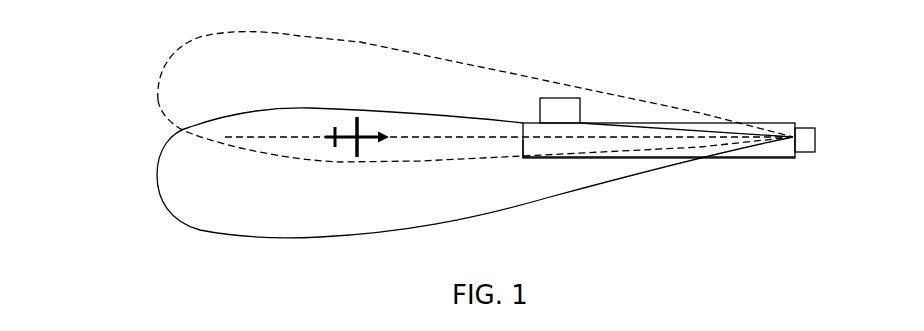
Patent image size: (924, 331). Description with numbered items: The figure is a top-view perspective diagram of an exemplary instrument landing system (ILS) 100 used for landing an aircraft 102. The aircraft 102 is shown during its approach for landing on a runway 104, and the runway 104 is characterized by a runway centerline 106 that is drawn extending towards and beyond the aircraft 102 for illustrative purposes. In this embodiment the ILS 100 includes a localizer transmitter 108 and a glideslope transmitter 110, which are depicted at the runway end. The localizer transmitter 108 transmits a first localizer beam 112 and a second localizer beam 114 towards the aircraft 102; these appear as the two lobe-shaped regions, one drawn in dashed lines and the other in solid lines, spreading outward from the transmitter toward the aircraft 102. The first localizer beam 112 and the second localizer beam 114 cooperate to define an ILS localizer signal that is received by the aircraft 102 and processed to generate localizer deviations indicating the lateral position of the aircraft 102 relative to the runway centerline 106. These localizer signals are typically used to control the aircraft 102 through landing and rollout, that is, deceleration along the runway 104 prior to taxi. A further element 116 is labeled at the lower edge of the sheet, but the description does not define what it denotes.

The instrument landing system 100 is at (659, 68).
The aircraft 102 is at (347, 150).
The runway 104 is at (765, 123).
The runway centerline 106 is at (542, 138).
The localizer transmitter 108 is at (811, 128).
The glideslope transmitter 110 is at (560, 98).
The first localizer beam 112 is at (157, 100).
The second localizer beam 114 is at (157, 175).
The reference element 116 is at (147, 330).